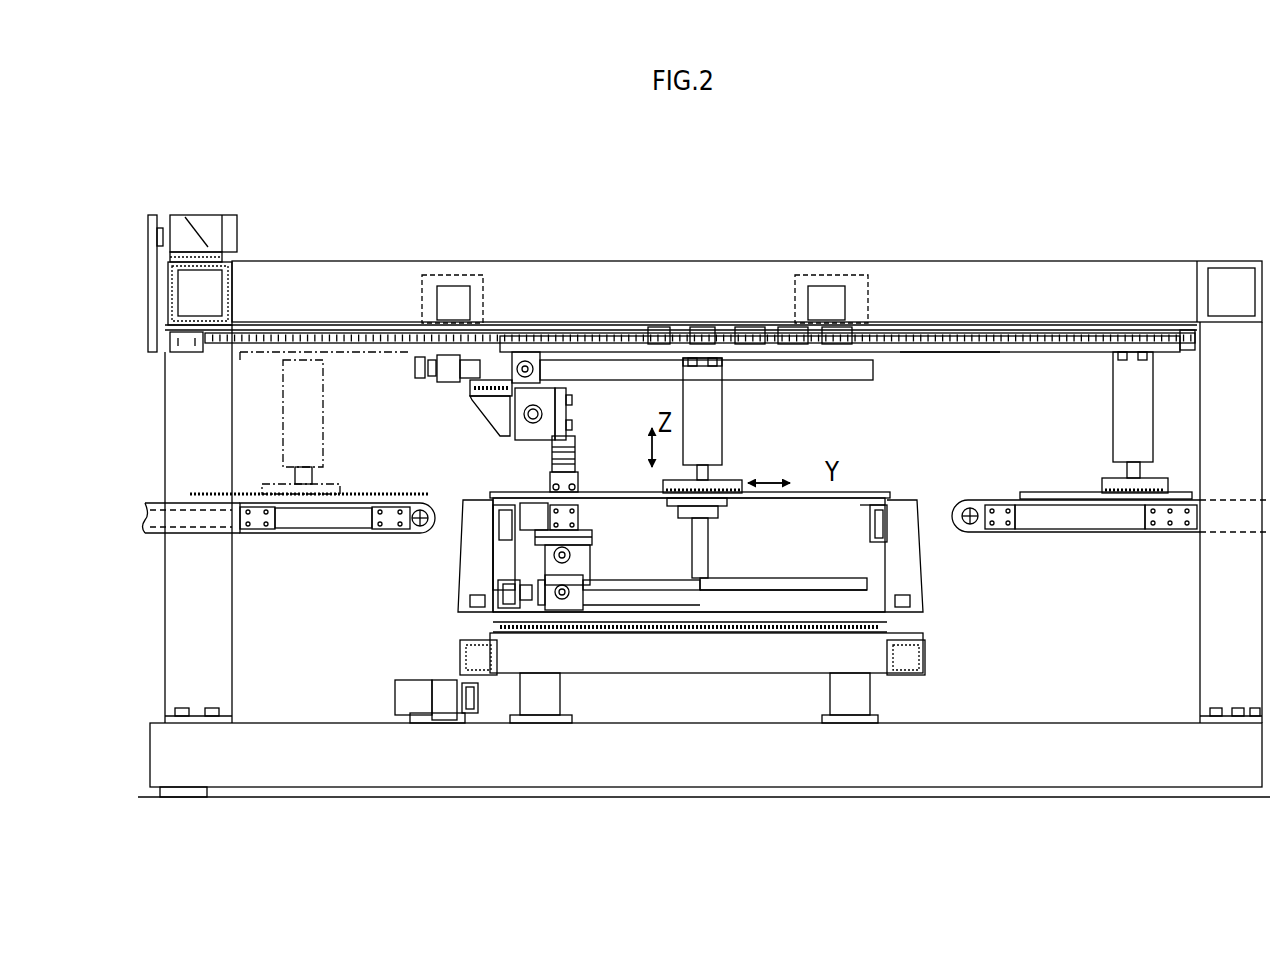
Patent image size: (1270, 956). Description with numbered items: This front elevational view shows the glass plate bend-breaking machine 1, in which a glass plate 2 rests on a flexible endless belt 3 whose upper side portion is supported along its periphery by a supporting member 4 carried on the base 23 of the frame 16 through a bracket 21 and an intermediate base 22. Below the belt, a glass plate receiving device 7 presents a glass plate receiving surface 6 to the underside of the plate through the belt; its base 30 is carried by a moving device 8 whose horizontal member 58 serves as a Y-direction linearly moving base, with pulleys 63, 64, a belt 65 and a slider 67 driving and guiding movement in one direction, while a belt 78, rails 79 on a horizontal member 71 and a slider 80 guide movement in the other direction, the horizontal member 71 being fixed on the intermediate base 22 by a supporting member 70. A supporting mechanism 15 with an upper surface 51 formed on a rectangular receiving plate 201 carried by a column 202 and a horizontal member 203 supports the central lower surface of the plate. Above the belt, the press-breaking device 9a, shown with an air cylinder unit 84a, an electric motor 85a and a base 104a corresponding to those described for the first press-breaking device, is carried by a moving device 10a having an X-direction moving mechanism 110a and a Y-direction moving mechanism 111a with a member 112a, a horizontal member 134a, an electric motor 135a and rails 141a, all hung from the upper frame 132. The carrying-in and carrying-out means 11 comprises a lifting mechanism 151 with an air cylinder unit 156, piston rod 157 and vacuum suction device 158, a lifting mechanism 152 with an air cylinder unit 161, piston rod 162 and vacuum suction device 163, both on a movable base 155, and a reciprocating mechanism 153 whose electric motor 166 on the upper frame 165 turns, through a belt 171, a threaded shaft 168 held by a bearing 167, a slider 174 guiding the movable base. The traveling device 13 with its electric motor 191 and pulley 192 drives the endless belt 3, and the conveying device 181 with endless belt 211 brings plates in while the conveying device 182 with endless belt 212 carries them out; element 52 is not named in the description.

The glass plate bend-breaking machine 1 is at (1218, 235).
The glass plate 2 is at (372, 494).
The endless belt 3 is at (858, 498).
The supporting member 4 is at (493, 548).
The glass plate receiving surface 6 is at (580, 514).
The glass plate receiving device 7 is at (598, 540).
The moving device 8 is at (598, 603).
The press-breaking device 9a is at (575, 421).
The moving device 10a is at (425, 400).
The carrying-in and carrying-out means 11 is at (743, 425).
The traveling device 13 is at (419, 674).
The supporting mechanism 15 is at (722, 532).
The frame 16 is at (1068, 258).
The bracket 21 is at (462, 562).
The intermediate base 22 is at (743, 660).
The base 23 is at (1048, 735).
The base 30 is at (548, 548).
The upper surface 51 is at (288, 405).
The frame corner 52 is at (888, 498).
The horizontal member 58 is at (592, 562).
The pulley 63 is at (550, 512).
The pulley 64 is at (570, 612).
The belt 65 is at (552, 612).
The slider 67 is at (497, 592).
The supporting member 70 is at (722, 618).
The horizontal member 71 is at (694, 603).
The belt 78 is at (520, 592).
The rails 79 is at (712, 578).
The slider 80 is at (612, 580).
The lower slide 84a is at (578, 464).
The upper slide 85a is at (578, 452).
The arm 104a is at (553, 445).
The upper pulley 110a is at (545, 366).
The connector 111a is at (414, 368).
The lower pulley 112a is at (562, 410).
The upper frame 132 is at (706, 272).
The upper bar 134a is at (842, 355).
The motor 135a is at (448, 372).
The lower bar 141a is at (806, 381).
The lifting mechanism 151 is at (728, 431).
The lifting mechanism 152 is at (1104, 424).
The reciprocating mechanism 153 is at (200, 270).
The movable base 155 is at (945, 353).
The air cylinder unit 156 is at (288, 432).
The piston rod 157 is at (710, 472).
The vacuum suction device 158 is at (745, 486).
The air cylinder unit 161 is at (1124, 422).
The piston rod 162 is at (1130, 470).
The vacuum suction device 163 is at (1102, 486).
The upper frame 165 is at (233, 285).
The electric motor 166 is at (205, 225).
The bearing 167 is at (188, 352).
The threaded shaft 168 is at (380, 332).
The belt 171 is at (146, 313).
The slider 174 is at (656, 328).
The conveying device 181 is at (1072, 540).
The conveying device 182 is at (308, 540).
The electric motor 191 is at (412, 692).
The pulley 192 is at (479, 692).
The receiving plate 201 is at (674, 507).
The column 202 is at (710, 533).
The horizontal member 203 is at (798, 578).
The endless belt 211 is at (1115, 535).
The endless belt 212 is at (345, 535).